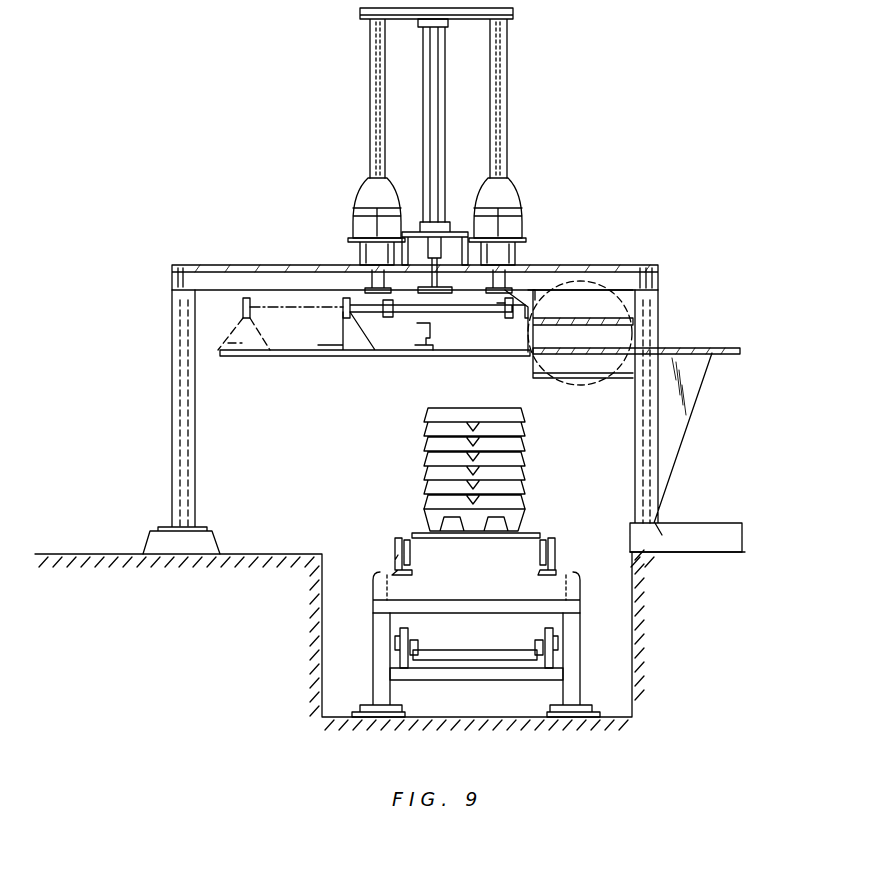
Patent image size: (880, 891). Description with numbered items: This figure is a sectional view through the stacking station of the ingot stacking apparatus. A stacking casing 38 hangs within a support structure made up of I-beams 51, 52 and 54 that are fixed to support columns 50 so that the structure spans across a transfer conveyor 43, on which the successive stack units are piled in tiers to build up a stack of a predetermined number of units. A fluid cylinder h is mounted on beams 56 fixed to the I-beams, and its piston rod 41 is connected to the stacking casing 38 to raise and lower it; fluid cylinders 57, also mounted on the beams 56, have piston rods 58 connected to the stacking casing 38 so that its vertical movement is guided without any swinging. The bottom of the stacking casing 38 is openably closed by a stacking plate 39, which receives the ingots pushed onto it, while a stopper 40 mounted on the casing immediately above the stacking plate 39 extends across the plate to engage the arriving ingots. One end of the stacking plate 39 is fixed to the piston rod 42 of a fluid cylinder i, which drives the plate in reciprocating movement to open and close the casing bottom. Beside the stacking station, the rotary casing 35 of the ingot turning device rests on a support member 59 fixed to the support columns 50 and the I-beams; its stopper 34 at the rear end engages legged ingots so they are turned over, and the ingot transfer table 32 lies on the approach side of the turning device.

The ingot transfer table 32 is at (688, 350).
The stopper 34 is at (540, 350).
The rotary casing 35 is at (612, 318).
The stacking casing 38 is at (532, 290).
The stacking plate 39 is at (292, 356).
The stopper 40 is at (430, 350).
The piston rod 41 is at (432, 238).
The piston rod 42 is at (342, 300).
The transfer conveyor 43 is at (520, 533).
The support column 50 is at (176, 466).
The I-beam 51 is at (660, 272).
The I-beam 52 is at (174, 279).
The I-beam 54 is at (236, 265).
The beam 56 is at (505, 235).
The fluid cylinder 57 is at (372, 44).
The piston rod 58 is at (358, 262).
The support member 59 is at (631, 368).
The fluid cylinder h is at (442, 112).
The fluid cylinder i is at (500, 305).